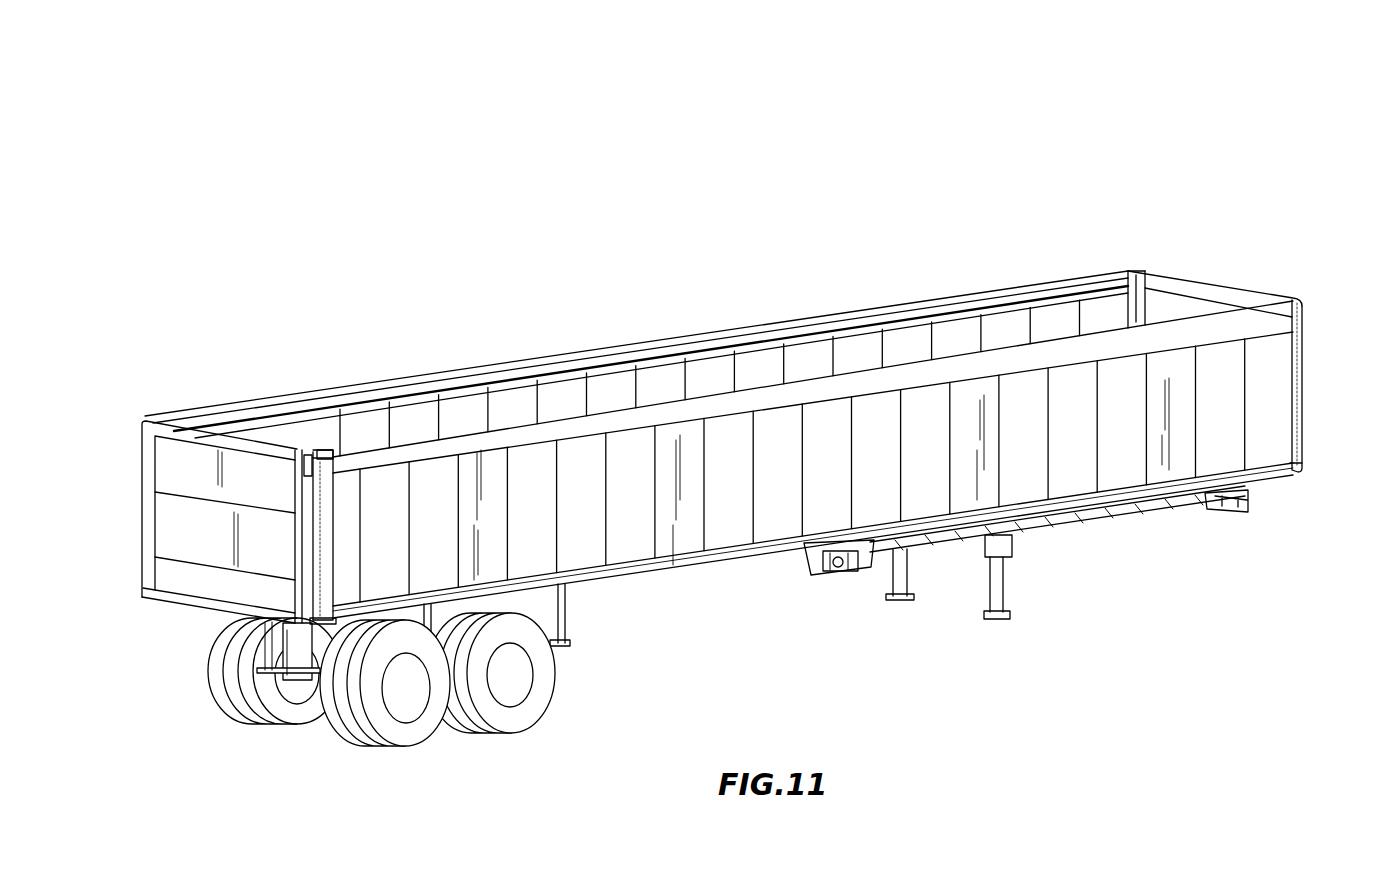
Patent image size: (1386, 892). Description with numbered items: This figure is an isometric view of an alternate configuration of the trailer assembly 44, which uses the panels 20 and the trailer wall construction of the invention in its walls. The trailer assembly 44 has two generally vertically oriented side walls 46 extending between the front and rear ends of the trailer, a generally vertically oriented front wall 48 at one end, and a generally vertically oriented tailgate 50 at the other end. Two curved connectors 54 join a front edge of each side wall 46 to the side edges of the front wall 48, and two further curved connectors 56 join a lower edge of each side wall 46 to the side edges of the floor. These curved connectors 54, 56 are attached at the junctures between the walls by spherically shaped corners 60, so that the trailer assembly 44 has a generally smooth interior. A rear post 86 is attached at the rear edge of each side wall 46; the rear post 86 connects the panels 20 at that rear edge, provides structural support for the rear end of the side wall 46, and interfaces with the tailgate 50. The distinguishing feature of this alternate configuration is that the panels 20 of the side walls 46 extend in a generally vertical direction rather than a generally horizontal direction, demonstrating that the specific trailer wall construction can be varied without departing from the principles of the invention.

The trailer assembly 44 is at (1118, 150).
The side walls 46 is at (597, 348).
The front wall 48 is at (1192, 279).
The tailgate 50 is at (136, 459).
The curved connectors 54 is at (1127, 307).
The curved connectors 56 is at (650, 589).
The spherically shaped corners 60 is at (1301, 469).
The rear post 86 is at (337, 522).
The panels 20 is at (575, 547).